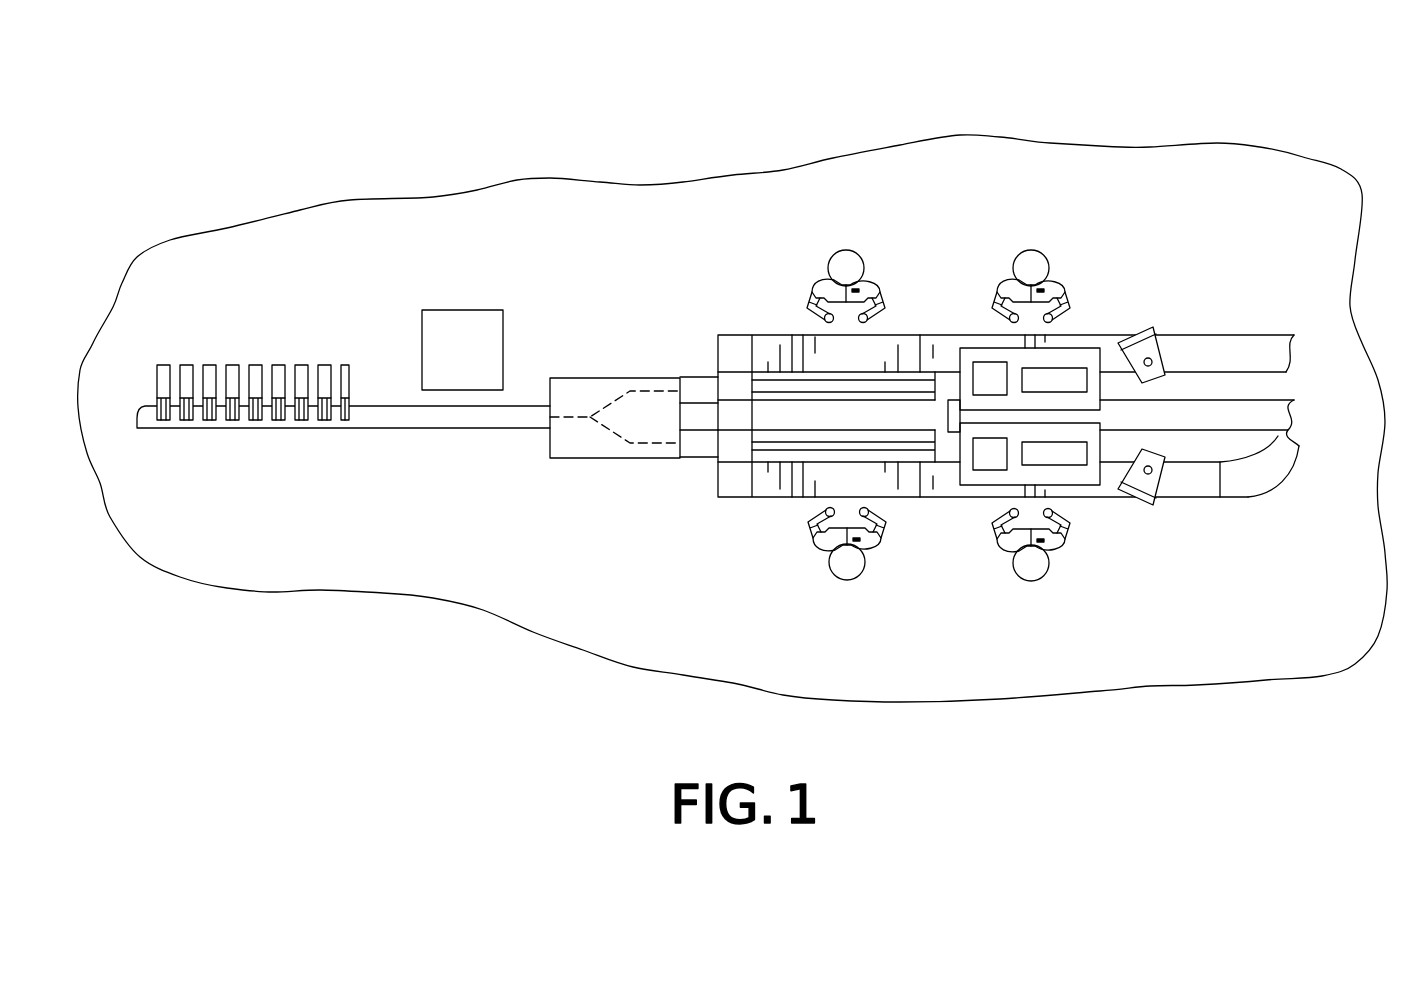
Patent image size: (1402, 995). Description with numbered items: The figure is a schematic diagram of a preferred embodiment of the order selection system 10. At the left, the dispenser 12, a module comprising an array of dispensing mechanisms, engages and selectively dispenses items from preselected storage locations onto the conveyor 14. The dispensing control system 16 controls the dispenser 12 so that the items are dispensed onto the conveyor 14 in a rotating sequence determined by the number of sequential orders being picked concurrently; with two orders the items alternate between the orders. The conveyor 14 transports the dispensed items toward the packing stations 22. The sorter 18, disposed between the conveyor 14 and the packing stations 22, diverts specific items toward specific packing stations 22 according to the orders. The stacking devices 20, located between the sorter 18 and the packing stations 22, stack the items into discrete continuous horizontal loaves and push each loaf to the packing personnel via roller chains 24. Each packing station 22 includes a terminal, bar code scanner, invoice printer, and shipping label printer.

The order selection system 10 is at (808, 128).
The dispenser 12 is at (257, 363).
The conveyor 14 is at (383, 427).
The dispensing control system 16 is at (470, 308).
The sorter 18 is at (600, 458).
The stacking devices 20 is at (737, 382).
The packing stations 22 is at (777, 336).
The roller chains 24 is at (897, 396).